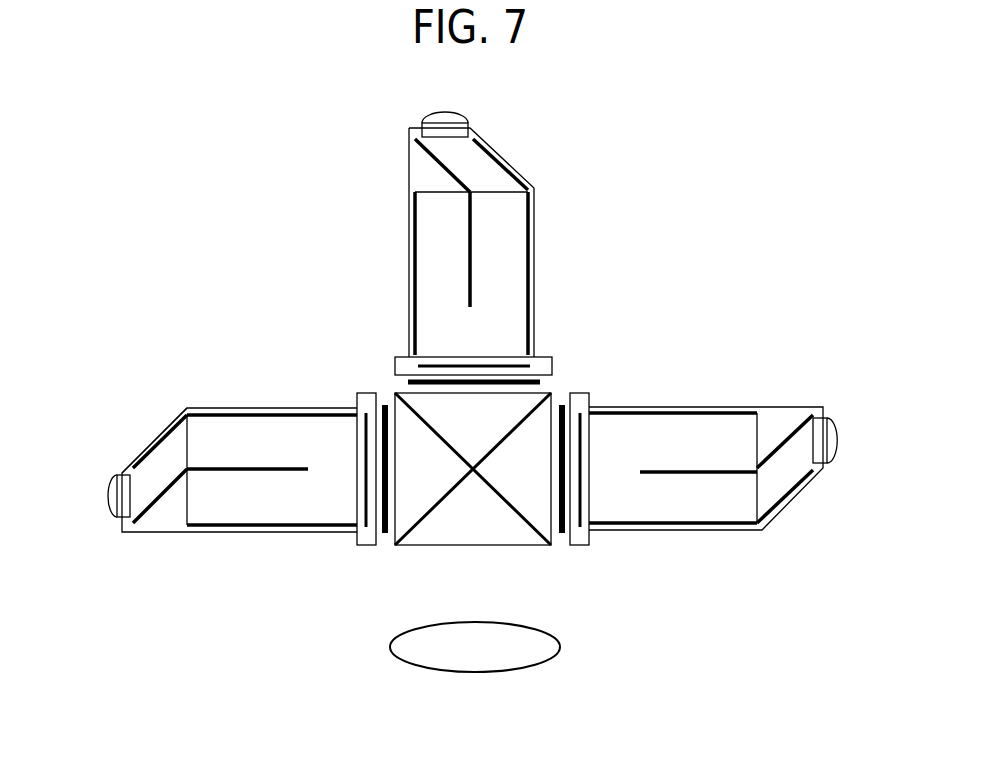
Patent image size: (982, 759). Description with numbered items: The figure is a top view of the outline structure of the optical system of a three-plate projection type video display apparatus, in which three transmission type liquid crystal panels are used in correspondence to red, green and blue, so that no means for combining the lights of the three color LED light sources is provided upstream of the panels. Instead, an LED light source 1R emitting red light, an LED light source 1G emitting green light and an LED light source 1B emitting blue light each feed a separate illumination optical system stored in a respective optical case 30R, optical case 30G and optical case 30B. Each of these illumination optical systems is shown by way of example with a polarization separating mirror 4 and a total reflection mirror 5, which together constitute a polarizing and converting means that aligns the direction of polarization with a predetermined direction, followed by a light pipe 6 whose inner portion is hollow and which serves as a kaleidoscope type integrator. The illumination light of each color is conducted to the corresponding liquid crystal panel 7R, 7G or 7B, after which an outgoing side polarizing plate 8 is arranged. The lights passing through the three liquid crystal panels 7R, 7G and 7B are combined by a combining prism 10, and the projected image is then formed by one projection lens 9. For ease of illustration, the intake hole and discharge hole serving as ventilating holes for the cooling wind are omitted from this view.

The LED light source 1G is at (455, 129).
The LED light source 1R is at (818, 448).
The LED light source 1B is at (122, 503).
The optical case 30G is at (535, 238).
The optical case 30R is at (723, 530).
The optical case 30B is at (248, 407).
The polarization separating mirror 4 is at (163, 490).
The total reflection mirror 5 is at (172, 420).
The light pipe 6 is at (412, 263).
The transmission type liquid crystal panel 7G is at (550, 360).
The transmission type liquid crystal panel 7R is at (363, 393).
The transmission type liquid crystal panel 7B is at (587, 400).
The outgoing side polarizing plate 8 is at (450, 384).
The projection lens 9 is at (543, 647).
The combining prism 10 is at (424, 535).